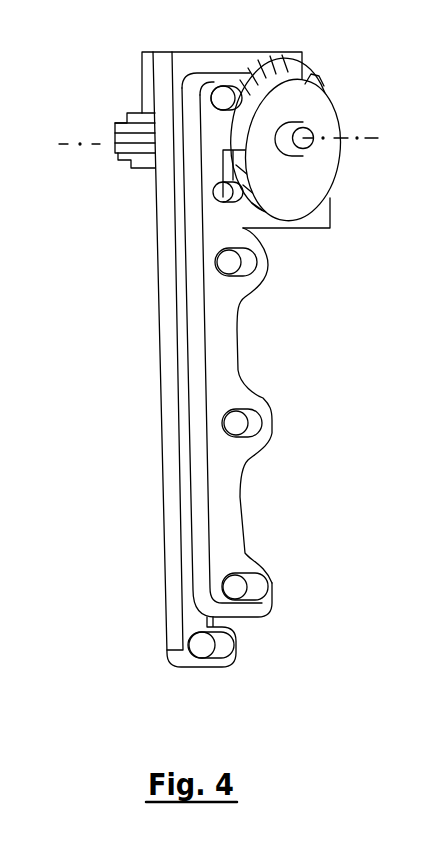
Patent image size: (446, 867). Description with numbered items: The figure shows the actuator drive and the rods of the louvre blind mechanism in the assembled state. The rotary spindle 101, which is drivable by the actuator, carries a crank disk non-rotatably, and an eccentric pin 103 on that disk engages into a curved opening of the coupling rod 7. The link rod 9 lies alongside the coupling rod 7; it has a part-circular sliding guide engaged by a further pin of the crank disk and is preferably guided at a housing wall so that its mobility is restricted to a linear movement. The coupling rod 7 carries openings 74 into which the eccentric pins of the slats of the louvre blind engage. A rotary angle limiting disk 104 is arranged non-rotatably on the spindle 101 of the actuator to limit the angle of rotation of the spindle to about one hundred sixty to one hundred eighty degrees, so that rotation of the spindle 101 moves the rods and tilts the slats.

The coupling rod 7 is at (205, 457).
The link rod 9 is at (168, 325).
The openings 74 is at (225, 98).
The rotary spindle 101 is at (113, 145).
The eccentric pin 103 is at (218, 187).
The rotary angle limiting disk 104 is at (340, 127).